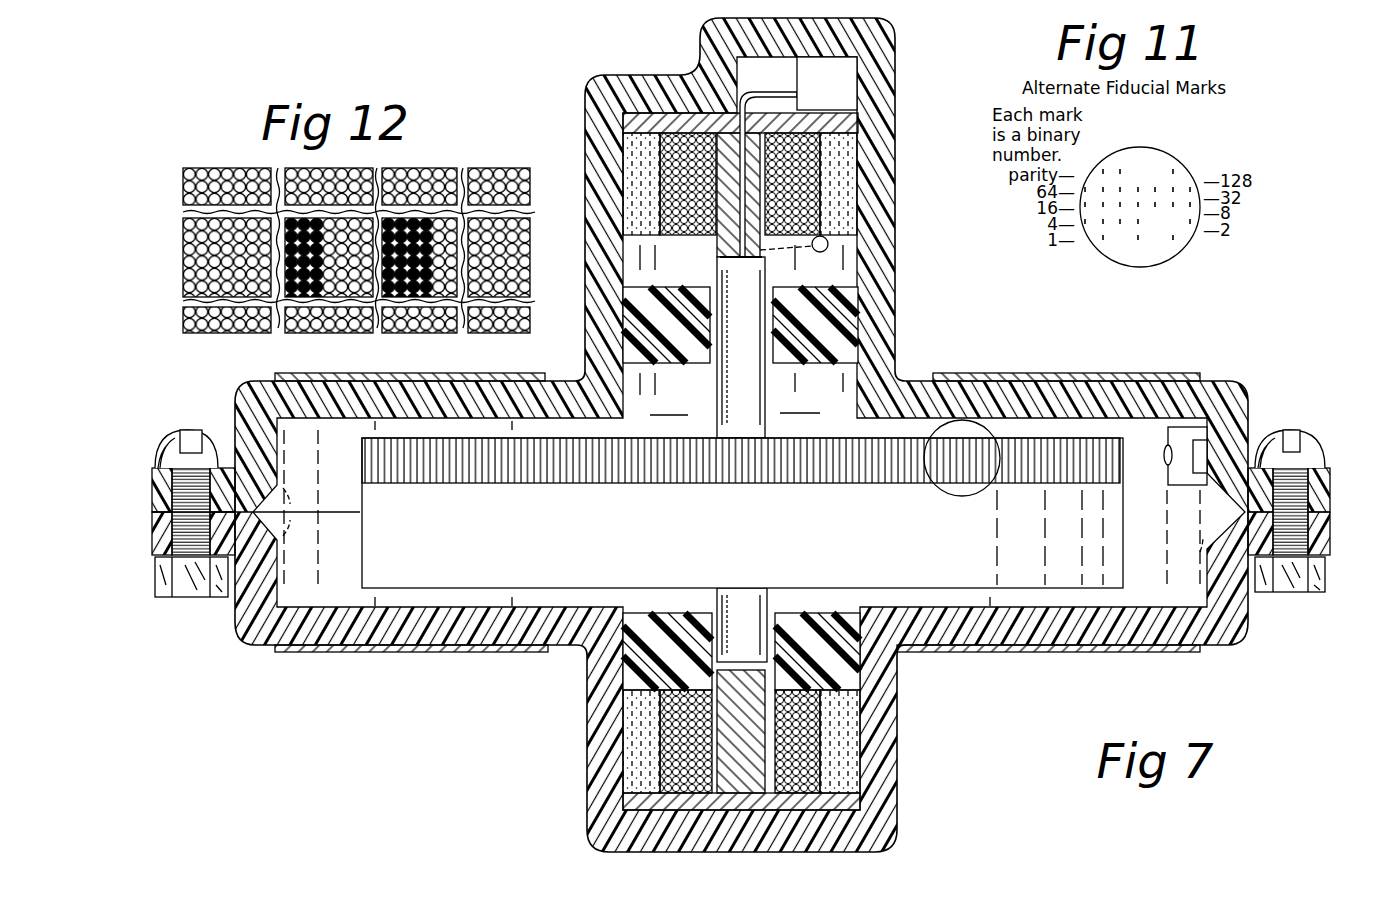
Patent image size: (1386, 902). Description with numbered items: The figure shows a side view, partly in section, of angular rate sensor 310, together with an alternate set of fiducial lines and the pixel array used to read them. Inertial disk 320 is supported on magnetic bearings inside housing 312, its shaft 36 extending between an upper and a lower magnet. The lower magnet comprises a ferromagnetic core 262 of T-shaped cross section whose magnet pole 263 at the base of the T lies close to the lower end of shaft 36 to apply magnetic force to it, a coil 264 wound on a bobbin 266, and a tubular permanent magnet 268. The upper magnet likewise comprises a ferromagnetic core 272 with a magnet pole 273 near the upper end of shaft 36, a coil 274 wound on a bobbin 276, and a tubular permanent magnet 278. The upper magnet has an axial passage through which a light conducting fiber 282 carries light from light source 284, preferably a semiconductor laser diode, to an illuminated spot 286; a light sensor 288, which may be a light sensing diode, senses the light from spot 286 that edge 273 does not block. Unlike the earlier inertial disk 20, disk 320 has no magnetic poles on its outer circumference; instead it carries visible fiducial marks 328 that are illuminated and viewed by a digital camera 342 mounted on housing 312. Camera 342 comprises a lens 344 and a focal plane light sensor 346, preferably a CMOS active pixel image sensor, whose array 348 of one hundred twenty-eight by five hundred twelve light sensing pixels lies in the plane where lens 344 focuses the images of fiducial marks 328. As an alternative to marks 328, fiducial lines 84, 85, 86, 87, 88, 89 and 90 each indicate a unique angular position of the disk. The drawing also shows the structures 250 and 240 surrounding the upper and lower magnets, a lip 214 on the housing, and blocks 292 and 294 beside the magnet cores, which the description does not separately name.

In FIG. 7, the inertial disk 20 is at (1132, 573).
In FIG. 7, the shaft 36 is at (778, 398).
In FIG. 11, the fiducial mark 84 is at (985, 432).
In FIG. 11, the fiducial mark 85 is at (1103, 155).
In FIG. 11, the fiducial mark 86 is at (1122, 258).
In FIG. 11, the fiducial mark 87 is at (1138, 155).
In FIG. 11, the fiducial mark 88 is at (1155, 258).
In FIG. 11, the fiducial mark 89 is at (1173, 155).
In FIG. 11, the fiducial mark 90 is at (1188, 258).
In FIG. 7, the housing cover lip 214 is at (1150, 375).
In FIG. 7, the lower motor assembly 240 is at (868, 763).
In FIG. 7, the upper motor assembly 250 is at (665, 100).
In FIG. 7, the ferromagnetic core 262 is at (650, 805).
In FIG. 7, the magnet pole 263 is at (745, 665).
In FIG. 7, the coil 264 is at (825, 727).
In FIG. 7, the bobbin 266 is at (805, 688).
In FIG. 7, the tubular permanent magnet 268 is at (637, 728).
In FIG. 7, the ferromagnetic core 272 is at (820, 122).
In FIG. 7, the magnet pole 273 is at (740, 258).
In FIG. 7, the coil 274 is at (685, 165).
In FIG. 7, the bobbin 276 is at (650, 136).
In FIG. 7, the tubular permanent magnet 278 is at (850, 180).
In FIG. 7, the light conducting fiber 282 is at (765, 88).
In FIG. 7, the light source 284 is at (827, 83).
In FIG. 7, the illuminated spot 286 is at (735, 252).
In FIG. 7, the light sensor 288 is at (826, 244).
In FIG. 7, the lower permanent magnet 292 is at (655, 632).
In FIG. 7, the upper permanent magnet 294 is at (828, 355).
In FIG. 7, the angular rate sensor 310 is at (310, 685).
In FIG. 7, the housing 312 is at (600, 338).
In FIG. 7, the inertial disk 320 is at (742, 513).
In FIG. 7, the fiducial marks 328 is at (470, 485).
In FIG. 7, the digital camera 342 is at (1140, 425).
In FIG. 7, the lens 344 is at (1172, 445).
In FIG. 7, the focal plane light sensor 346 is at (1201, 456).
In FIG. 12, the array of light sensors 348 is at (455, 145).